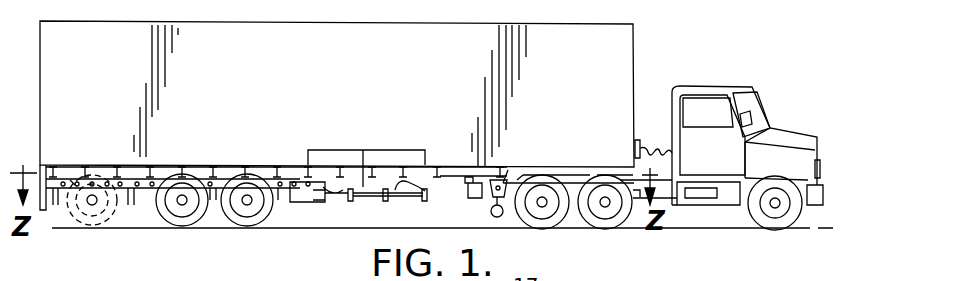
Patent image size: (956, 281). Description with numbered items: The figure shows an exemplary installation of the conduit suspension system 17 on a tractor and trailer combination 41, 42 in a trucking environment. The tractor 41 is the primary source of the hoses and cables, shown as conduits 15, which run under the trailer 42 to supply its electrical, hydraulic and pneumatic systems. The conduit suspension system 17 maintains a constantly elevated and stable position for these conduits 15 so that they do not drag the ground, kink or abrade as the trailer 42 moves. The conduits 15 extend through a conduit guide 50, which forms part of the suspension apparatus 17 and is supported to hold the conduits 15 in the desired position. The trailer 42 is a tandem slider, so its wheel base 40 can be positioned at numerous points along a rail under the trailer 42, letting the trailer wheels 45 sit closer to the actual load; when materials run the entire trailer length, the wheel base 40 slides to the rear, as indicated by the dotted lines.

The conduits 15 is at (372, 197).
The conduit suspension system 17 is at (366, 154).
The wheel base 40 is at (113, 185).
The tractor 41 is at (713, 83).
The trailer 42 is at (337, 123).
The trailer wheels 45 is at (193, 218).
The conduit guide 50 is at (350, 201).